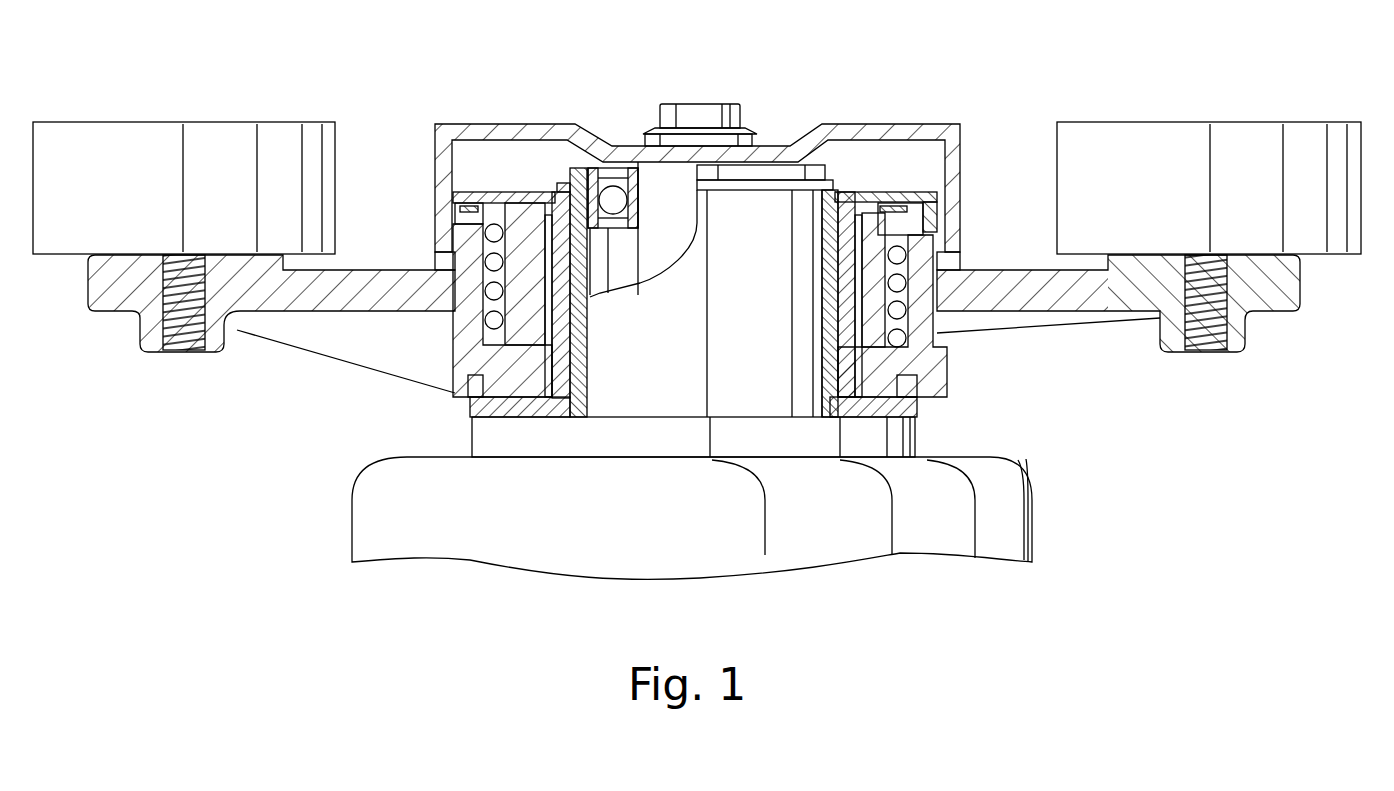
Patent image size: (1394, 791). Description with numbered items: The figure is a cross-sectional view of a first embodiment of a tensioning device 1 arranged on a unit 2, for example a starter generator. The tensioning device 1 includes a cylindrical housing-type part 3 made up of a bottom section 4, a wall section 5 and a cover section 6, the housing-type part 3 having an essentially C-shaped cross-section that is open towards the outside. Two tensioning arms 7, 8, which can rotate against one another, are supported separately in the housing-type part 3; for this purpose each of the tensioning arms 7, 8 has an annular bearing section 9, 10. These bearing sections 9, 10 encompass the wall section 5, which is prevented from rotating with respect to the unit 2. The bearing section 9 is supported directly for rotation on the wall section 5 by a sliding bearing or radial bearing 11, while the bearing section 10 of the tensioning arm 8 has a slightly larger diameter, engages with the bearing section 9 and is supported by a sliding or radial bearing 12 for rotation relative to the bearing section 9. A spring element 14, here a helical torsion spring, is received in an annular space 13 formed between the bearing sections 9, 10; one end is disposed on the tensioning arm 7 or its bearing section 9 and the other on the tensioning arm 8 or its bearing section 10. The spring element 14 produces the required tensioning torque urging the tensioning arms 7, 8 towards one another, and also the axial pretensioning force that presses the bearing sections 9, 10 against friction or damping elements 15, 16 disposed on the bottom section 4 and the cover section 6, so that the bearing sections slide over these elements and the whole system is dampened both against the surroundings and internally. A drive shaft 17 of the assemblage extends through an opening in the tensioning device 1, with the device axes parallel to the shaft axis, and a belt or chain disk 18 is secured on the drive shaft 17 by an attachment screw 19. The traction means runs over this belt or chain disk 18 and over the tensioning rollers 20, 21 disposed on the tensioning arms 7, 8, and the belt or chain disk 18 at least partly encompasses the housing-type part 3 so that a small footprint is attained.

The tensioning device 1 is at (1078, 66).
The unit 2 is at (690, 532).
The housing-type part 3 is at (578, 390).
The bottom section 4 is at (492, 418).
The wall section 5 is at (570, 363).
The cover section 6 is at (491, 190).
The tensioning arm 7 is at (342, 302).
The tensioning arm 8 is at (1008, 286).
The annular bearing section 9 is at (545, 190).
The annular bearing section 10 is at (882, 200).
The sliding bearing or radial bearing 11 is at (570, 332).
The sliding or radial bearing 12 is at (828, 297).
The annular space 13 is at (466, 338).
The spring element 14 is at (468, 218).
The friction or damping element 15 is at (882, 415).
The friction or damping element 16 is at (894, 205).
The drive shaft 17 is at (662, 178).
The belt or chain disk 18 is at (836, 131).
The attachment screw 19 is at (700, 108).
The tensioning roller 20 is at (126, 203).
The tensioning roller 21 is at (1156, 203).